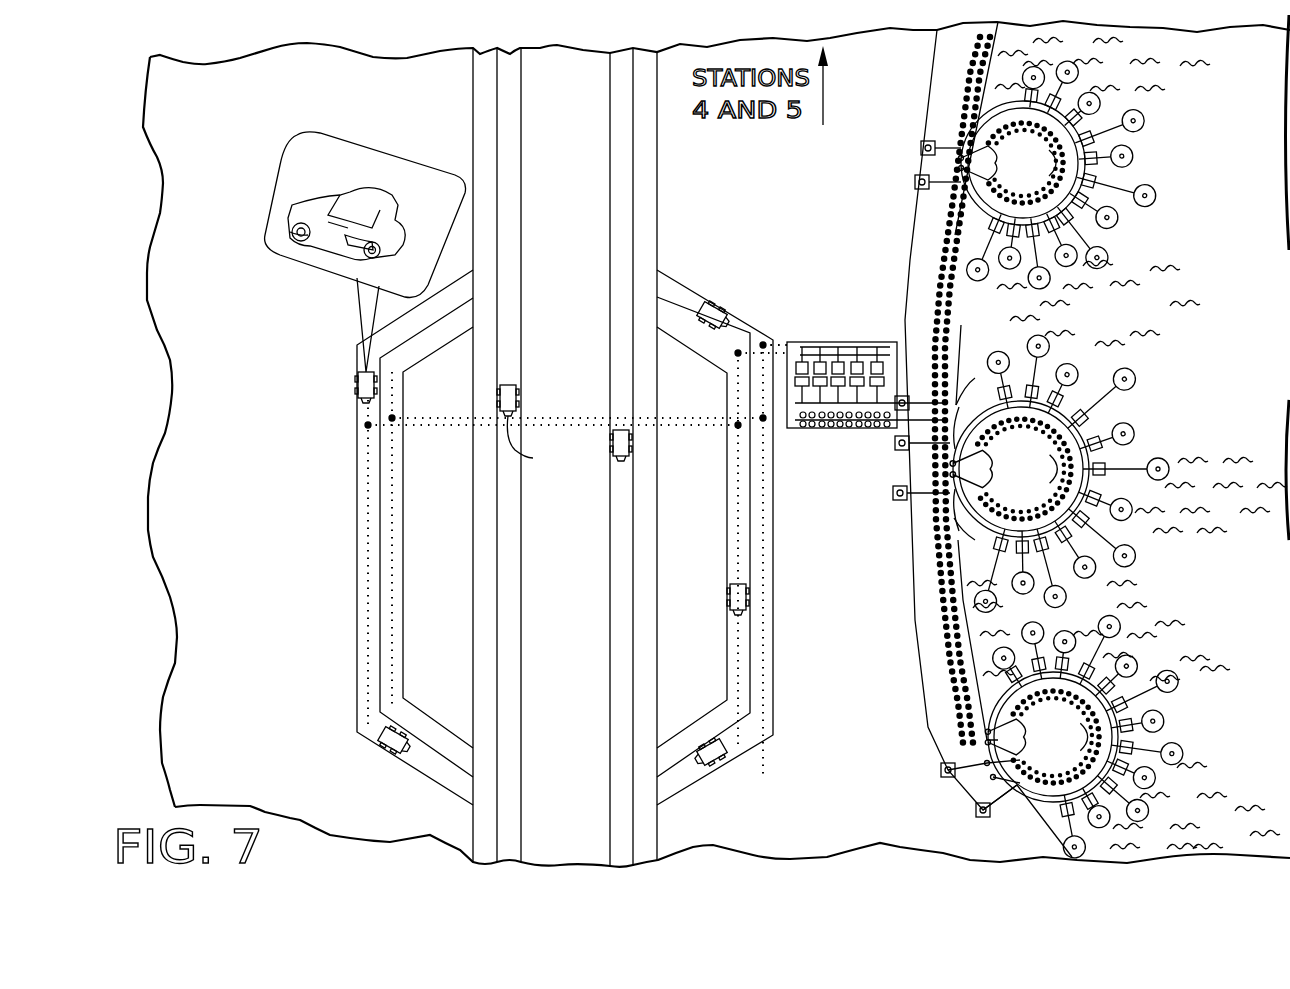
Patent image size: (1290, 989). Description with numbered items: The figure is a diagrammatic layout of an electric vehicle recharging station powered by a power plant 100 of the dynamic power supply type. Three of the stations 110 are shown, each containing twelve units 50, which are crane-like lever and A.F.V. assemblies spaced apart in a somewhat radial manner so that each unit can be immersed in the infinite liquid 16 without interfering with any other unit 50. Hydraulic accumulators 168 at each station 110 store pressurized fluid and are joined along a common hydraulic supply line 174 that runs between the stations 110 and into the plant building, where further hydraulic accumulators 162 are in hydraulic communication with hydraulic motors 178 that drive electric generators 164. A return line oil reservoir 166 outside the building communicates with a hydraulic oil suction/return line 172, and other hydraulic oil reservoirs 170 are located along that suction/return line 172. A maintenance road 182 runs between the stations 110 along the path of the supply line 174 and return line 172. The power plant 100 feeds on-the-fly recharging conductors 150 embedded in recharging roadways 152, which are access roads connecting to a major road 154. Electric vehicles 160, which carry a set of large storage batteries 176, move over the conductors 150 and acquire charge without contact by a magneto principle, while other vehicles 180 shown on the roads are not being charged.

The infinite liquid 16 is at (1249, 558).
The lever and A.F.V. assembly unit 50 is at (1148, 183).
The power plant 100 is at (806, 363).
The station 110 is at (1119, 459).
The recharging conductor 150 is at (395, 628).
The recharging roadway 152 is at (372, 520).
The major road 154 is at (515, 690).
The electric vehicle 160 is at (356, 398).
The hydraulic accumulator 162 is at (862, 387).
The electric generator 164 is at (800, 362).
The return line oil reservoir 166 is at (958, 400).
The hydraulic accumulator 168 is at (1034, 451).
The hydraulic oil reservoir 170 is at (915, 182).
The hydraulic oil suction/return line 172 is at (950, 250).
The common hydraulic supply line 174 is at (955, 690).
The storage batteries 176 is at (350, 250).
The hydraulic motor 178 is at (797, 380).
The non-charging vehicle 180 is at (612, 445).
The maintenance road 182 is at (915, 568).